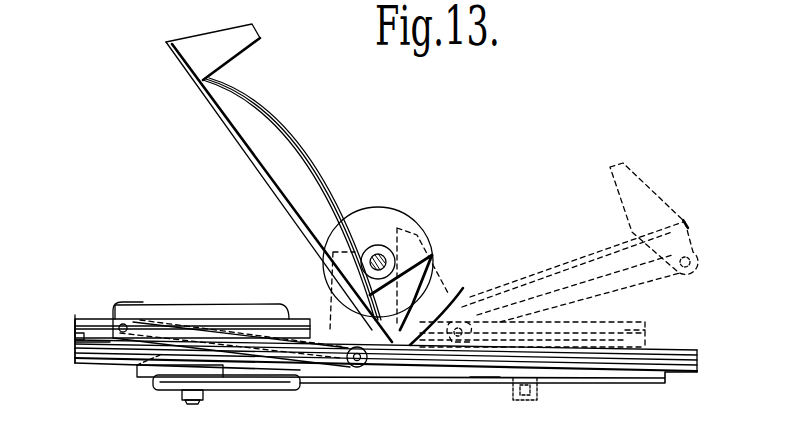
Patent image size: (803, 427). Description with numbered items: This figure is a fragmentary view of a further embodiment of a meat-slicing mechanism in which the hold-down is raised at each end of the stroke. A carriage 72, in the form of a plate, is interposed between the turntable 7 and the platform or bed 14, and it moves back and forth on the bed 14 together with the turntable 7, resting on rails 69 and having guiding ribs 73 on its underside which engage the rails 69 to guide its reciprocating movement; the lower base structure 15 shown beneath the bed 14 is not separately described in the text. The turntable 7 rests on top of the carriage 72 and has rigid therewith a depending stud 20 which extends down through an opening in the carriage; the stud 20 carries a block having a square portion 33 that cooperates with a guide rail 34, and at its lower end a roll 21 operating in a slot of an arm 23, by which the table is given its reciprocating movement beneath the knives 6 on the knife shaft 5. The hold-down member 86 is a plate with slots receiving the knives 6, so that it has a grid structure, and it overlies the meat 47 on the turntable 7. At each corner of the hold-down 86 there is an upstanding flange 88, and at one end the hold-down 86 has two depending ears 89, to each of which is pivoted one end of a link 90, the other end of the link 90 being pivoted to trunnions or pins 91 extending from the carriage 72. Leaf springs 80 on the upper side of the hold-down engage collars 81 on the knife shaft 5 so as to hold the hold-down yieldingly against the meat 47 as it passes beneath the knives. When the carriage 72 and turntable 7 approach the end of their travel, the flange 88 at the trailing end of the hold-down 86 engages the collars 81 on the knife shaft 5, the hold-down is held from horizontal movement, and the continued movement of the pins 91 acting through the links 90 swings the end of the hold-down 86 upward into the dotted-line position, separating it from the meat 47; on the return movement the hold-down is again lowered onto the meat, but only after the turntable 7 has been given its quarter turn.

The knife shaft 5 is at (379, 258).
The knives 6 is at (411, 219).
The turntable 7 is at (292, 320).
The bed 14 is at (697, 355).
The base rail 15 is at (97, 352).
The stud 20 is at (153, 360).
The roll 21 is at (213, 383).
The arm 23 is at (260, 388).
The square portion 33 is at (168, 367).
The guide rail 34 is at (486, 377).
The meat 47 is at (230, 313).
The rails 69 is at (445, 305).
The carriage 72 is at (80, 337).
The guiding ribs 73 is at (77, 343).
The leaf springs 80 is at (320, 172).
The collars 81 is at (369, 247).
The hold-down member 86 is at (267, 180).
The upstanding flange 88 is at (246, 42).
The depending ears 89 is at (378, 346).
The link 90 is at (164, 326).
The trunnions or pins 91 is at (124, 318).